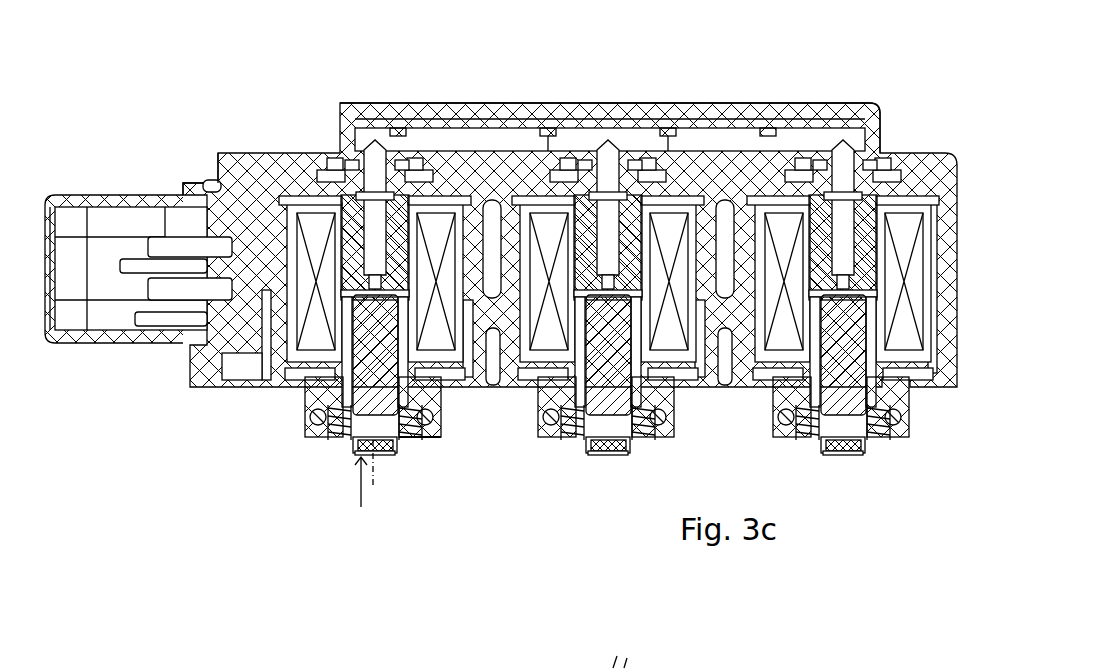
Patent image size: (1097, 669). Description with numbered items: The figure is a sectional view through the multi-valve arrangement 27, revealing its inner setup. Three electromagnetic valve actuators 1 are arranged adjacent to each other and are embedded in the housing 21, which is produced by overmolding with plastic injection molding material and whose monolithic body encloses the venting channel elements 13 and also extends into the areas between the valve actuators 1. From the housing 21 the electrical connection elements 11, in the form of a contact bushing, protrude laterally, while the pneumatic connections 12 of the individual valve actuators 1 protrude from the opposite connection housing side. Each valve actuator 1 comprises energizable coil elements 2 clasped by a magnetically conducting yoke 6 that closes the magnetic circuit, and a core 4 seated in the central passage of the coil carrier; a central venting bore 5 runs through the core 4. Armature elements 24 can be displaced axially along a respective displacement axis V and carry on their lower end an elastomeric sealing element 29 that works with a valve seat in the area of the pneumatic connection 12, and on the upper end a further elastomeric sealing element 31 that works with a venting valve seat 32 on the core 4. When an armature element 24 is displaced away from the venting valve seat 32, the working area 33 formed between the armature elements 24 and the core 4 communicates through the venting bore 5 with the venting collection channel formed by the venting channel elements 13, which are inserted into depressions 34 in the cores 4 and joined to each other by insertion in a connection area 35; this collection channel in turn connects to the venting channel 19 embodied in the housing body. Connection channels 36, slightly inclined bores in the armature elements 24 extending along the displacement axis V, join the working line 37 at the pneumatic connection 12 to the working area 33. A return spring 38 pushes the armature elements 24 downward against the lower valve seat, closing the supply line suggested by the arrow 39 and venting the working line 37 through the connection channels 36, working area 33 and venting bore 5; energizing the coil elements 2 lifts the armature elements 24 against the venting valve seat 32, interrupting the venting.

The electromagnetic valve actuator 1 is at (553, 318).
The coil elements 2 is at (232, 378).
The core 4 is at (360, 175).
The central venting bore 5 is at (348, 105).
The yoke 6 is at (235, 178).
The electrical connection elements 11 is at (124, 307).
The pneumatic connections 12 is at (313, 440).
The venting channel elements 13 is at (397, 107).
The venting channel 19 is at (605, 110).
The housing 21 is at (280, 240).
The armature elements 24 is at (388, 458).
The multi-valve arrangement 27 is at (275, 160).
The sealing element 29 is at (410, 447).
The further elastomeric sealing element 31 is at (338, 200).
The venting valve seat 32 is at (505, 108).
The working area 33 is at (262, 384).
The depressions 34 is at (387, 190).
The connection area 35 is at (560, 112).
The connection channels 36 is at (433, 418).
The working line 37 is at (417, 443).
The return spring 38 is at (343, 447).
The arrow 39 is at (362, 480).
The displacement axis V is at (347, 443).